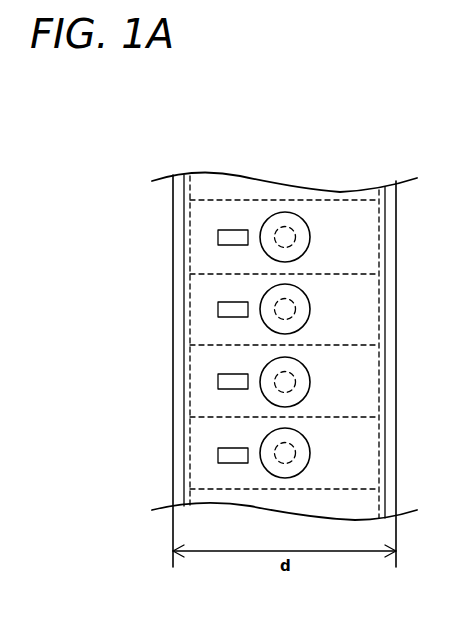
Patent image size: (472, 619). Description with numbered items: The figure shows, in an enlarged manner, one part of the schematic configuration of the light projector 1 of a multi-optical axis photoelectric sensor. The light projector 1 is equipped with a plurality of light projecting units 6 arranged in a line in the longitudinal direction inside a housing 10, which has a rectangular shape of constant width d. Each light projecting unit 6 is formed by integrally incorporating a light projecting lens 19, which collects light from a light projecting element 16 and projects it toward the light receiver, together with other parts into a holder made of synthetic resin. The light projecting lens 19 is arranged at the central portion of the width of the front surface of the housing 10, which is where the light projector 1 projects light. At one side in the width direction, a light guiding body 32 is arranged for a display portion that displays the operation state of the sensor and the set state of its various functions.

The light projector 1 is at (155, 215).
The light projecting unit 6 is at (385, 213).
The housing 10 is at (173, 480).
The light projecting element 16 is at (282, 203).
The light projecting lens 19 is at (310, 237).
The light guiding body 32 is at (218, 240).